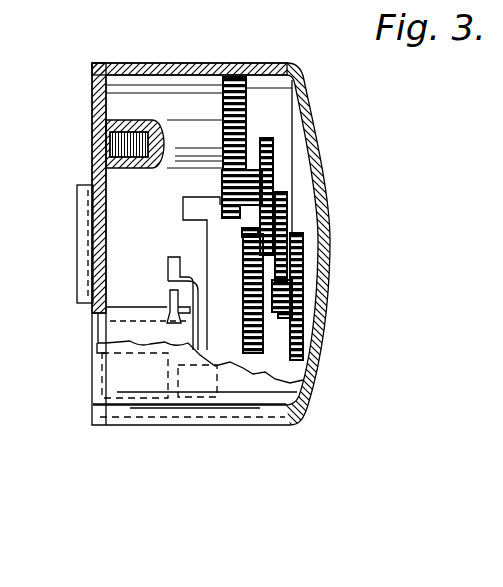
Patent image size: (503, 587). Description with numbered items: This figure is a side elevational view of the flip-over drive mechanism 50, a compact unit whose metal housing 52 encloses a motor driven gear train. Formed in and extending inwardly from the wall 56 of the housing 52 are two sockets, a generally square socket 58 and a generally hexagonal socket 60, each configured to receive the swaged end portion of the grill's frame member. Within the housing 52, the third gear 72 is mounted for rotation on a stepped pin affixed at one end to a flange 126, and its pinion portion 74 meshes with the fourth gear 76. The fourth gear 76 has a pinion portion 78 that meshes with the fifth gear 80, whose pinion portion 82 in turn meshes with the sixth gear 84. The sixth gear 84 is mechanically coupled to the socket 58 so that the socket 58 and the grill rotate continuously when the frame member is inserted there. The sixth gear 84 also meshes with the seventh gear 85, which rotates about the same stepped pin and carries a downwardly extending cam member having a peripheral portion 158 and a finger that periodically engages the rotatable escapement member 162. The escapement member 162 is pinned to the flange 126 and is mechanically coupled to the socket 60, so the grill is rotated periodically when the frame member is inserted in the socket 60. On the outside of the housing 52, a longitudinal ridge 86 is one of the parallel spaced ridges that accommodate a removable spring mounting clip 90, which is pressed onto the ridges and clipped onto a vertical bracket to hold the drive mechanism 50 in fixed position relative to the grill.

The flip-over drive mechanism 50 is at (273, 50).
The housing 52 is at (303, 398).
The rear wall 56 is at (92, 168).
The socket 58 is at (88, 147).
The socket 60 is at (97, 330).
The third gear 72 is at (303, 333).
The pinion portion 74 is at (305, 308).
The fourth gear 76 is at (288, 212).
The pinion portion 78 is at (253, 224).
The fifth gear 80 is at (282, 162).
The pinion portion 82 is at (224, 188).
The sixth gear 84 is at (223, 100).
The seventh gear 85 is at (254, 374).
The longitudinal ridge 86 is at (90, 387).
The spring mounting clip 90 is at (73, 243).
The flange 126 is at (166, 265).
The peripheral portion 158 is at (187, 195).
The escapement member 162 is at (190, 308).